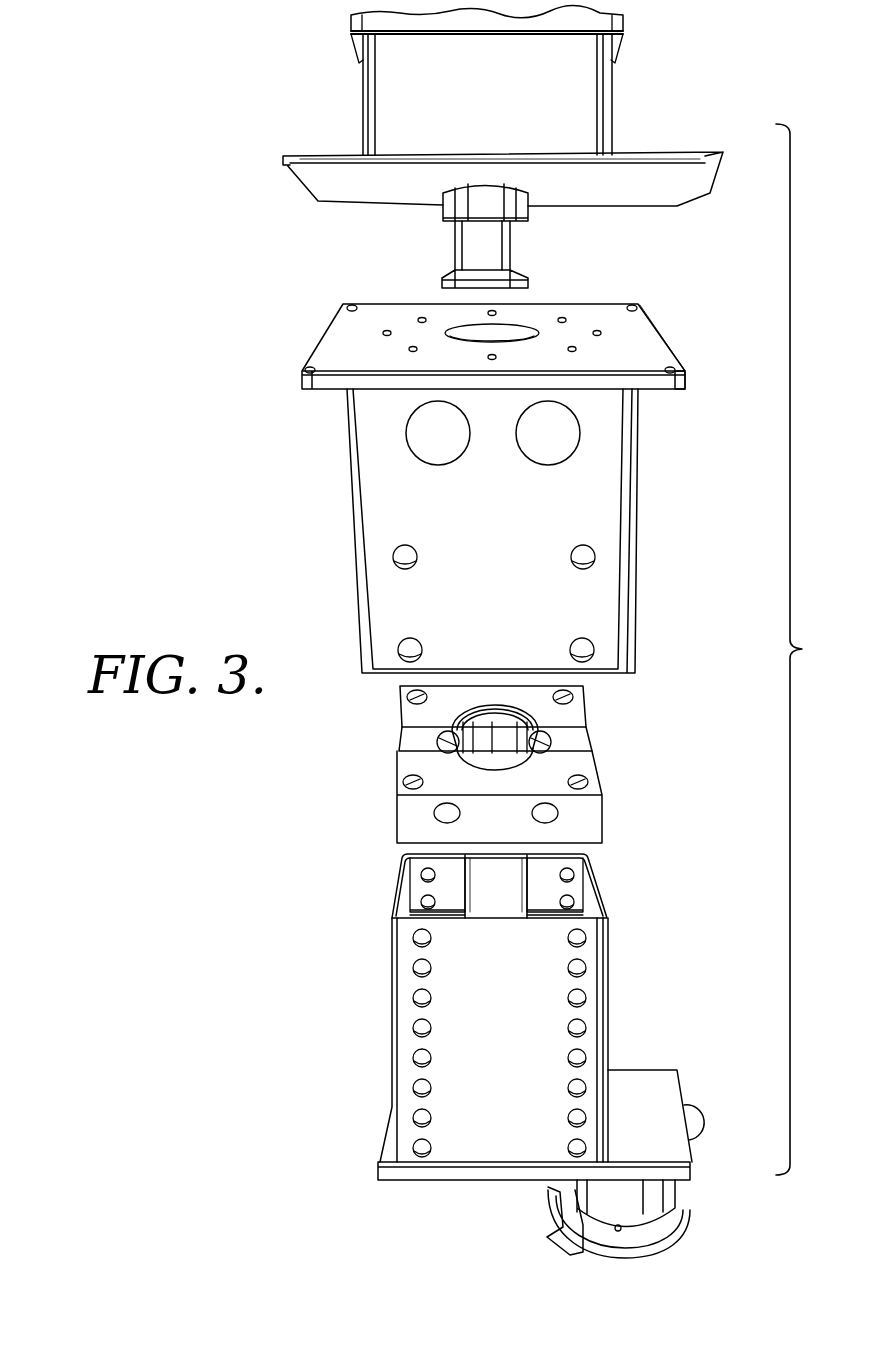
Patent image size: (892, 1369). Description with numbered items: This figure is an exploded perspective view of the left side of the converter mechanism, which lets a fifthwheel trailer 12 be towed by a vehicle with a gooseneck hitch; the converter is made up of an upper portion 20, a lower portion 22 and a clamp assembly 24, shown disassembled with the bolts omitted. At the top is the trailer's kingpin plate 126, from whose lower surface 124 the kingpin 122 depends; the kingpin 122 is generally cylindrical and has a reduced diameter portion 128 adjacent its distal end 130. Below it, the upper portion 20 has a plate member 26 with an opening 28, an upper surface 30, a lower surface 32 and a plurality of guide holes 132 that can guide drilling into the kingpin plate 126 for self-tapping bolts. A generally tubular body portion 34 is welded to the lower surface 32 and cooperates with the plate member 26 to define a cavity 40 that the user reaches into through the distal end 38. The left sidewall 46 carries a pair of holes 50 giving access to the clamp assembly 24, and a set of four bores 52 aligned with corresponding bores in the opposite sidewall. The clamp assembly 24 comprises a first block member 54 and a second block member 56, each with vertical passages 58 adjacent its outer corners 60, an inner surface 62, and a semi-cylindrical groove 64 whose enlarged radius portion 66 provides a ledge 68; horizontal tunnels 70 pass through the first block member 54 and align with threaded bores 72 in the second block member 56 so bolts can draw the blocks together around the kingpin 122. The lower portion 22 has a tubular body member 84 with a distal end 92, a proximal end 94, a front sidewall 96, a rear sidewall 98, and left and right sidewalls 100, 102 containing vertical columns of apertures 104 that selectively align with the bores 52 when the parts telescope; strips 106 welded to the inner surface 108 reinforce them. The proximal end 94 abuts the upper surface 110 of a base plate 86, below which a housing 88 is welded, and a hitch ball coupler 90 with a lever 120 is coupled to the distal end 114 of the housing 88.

The fifthwheel trailer 12 is at (372, 100).
The upper portion 20 is at (362, 477).
The lower portion 22 is at (530, 1067).
The clamp assembly 24 is at (508, 743).
The plate member 26 is at (332, 338).
The opening 28 is at (520, 330).
The upper surface 30 is at (655, 330).
The lower surface 32 is at (668, 390).
The body portion 34 is at (613, 613).
The distal end 38 is at (372, 673).
The cavity 40 is at (449, 447).
The left sidewall 46 is at (613, 505).
The holes 50 is at (518, 427).
The bores 52 is at (576, 645).
The first block member 54 is at (590, 762).
The second block member 56 is at (583, 720).
The vertical passages 58 is at (422, 688).
The outer corners 60 is at (583, 687).
The inner surface 62 is at (590, 738).
The semi-cylindrical groove 64 is at (503, 748).
The enlarged radius portion 66 is at (495, 703).
The ledge 68 is at (473, 707).
The tunnels 70 is at (532, 813).
The bores 72 is at (542, 744).
The body member 84 is at (600, 940).
The base plate 86 is at (645, 1072).
The housing 88 is at (672, 1194).
The hitch ball coupler 90 is at (682, 1230).
The distal end 92 is at (400, 865).
The proximal end 94 is at (510, 1162).
The front sidewall 96 is at (595, 865).
The rear sidewall 98 is at (388, 902).
The left sidewall 100 is at (600, 1010).
The right sidewall 102 is at (487, 907).
The apertures 104 is at (428, 882).
The strips 106 is at (538, 872).
The inner surface 108 is at (597, 900).
The upper surface 110 is at (678, 1072).
The distal end 114 is at (620, 1232).
The lever 120 is at (710, 1125).
The kingpin 122 is at (508, 247).
The lower surface 124 is at (672, 198).
The kingpin plate 126 is at (677, 162).
The reduced diameter portion 128 is at (456, 240).
The distal end 130 is at (450, 288).
The guide holes 132 is at (358, 305).